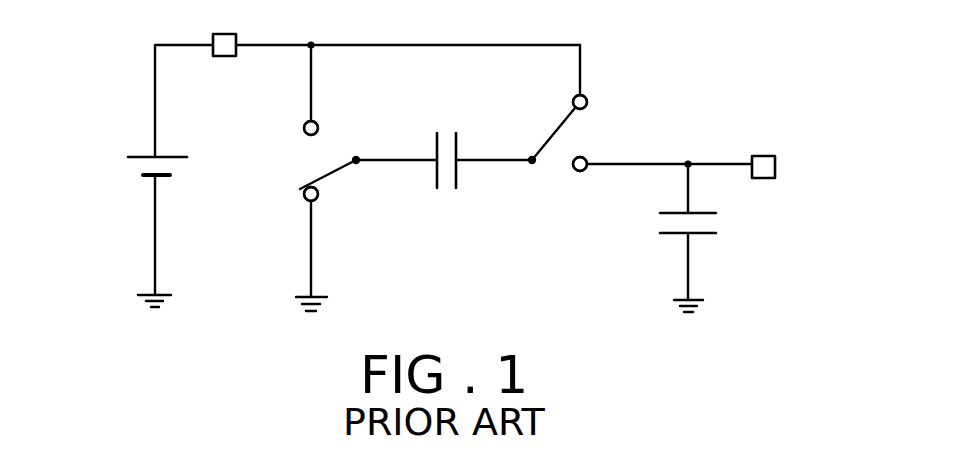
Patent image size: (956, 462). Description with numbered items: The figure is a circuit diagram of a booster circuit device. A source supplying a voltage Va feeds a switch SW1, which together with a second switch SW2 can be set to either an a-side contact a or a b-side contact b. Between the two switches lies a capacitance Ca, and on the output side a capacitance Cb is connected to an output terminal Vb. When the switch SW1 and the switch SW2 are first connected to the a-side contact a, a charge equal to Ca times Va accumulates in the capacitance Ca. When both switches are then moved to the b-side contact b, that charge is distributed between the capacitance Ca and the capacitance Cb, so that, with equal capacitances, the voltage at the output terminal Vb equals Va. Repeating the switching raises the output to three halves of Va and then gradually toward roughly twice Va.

The voltage Va is at (229, 28).
The output terminal Vb is at (776, 165).
The switch SW1 is at (324, 163).
The switch SW2 is at (575, 134).
The capacitance Ca is at (445, 186).
The capacitance Cb is at (700, 235).
The a-side contact a is at (430, 150).
The b-side contact b is at (432, 158).